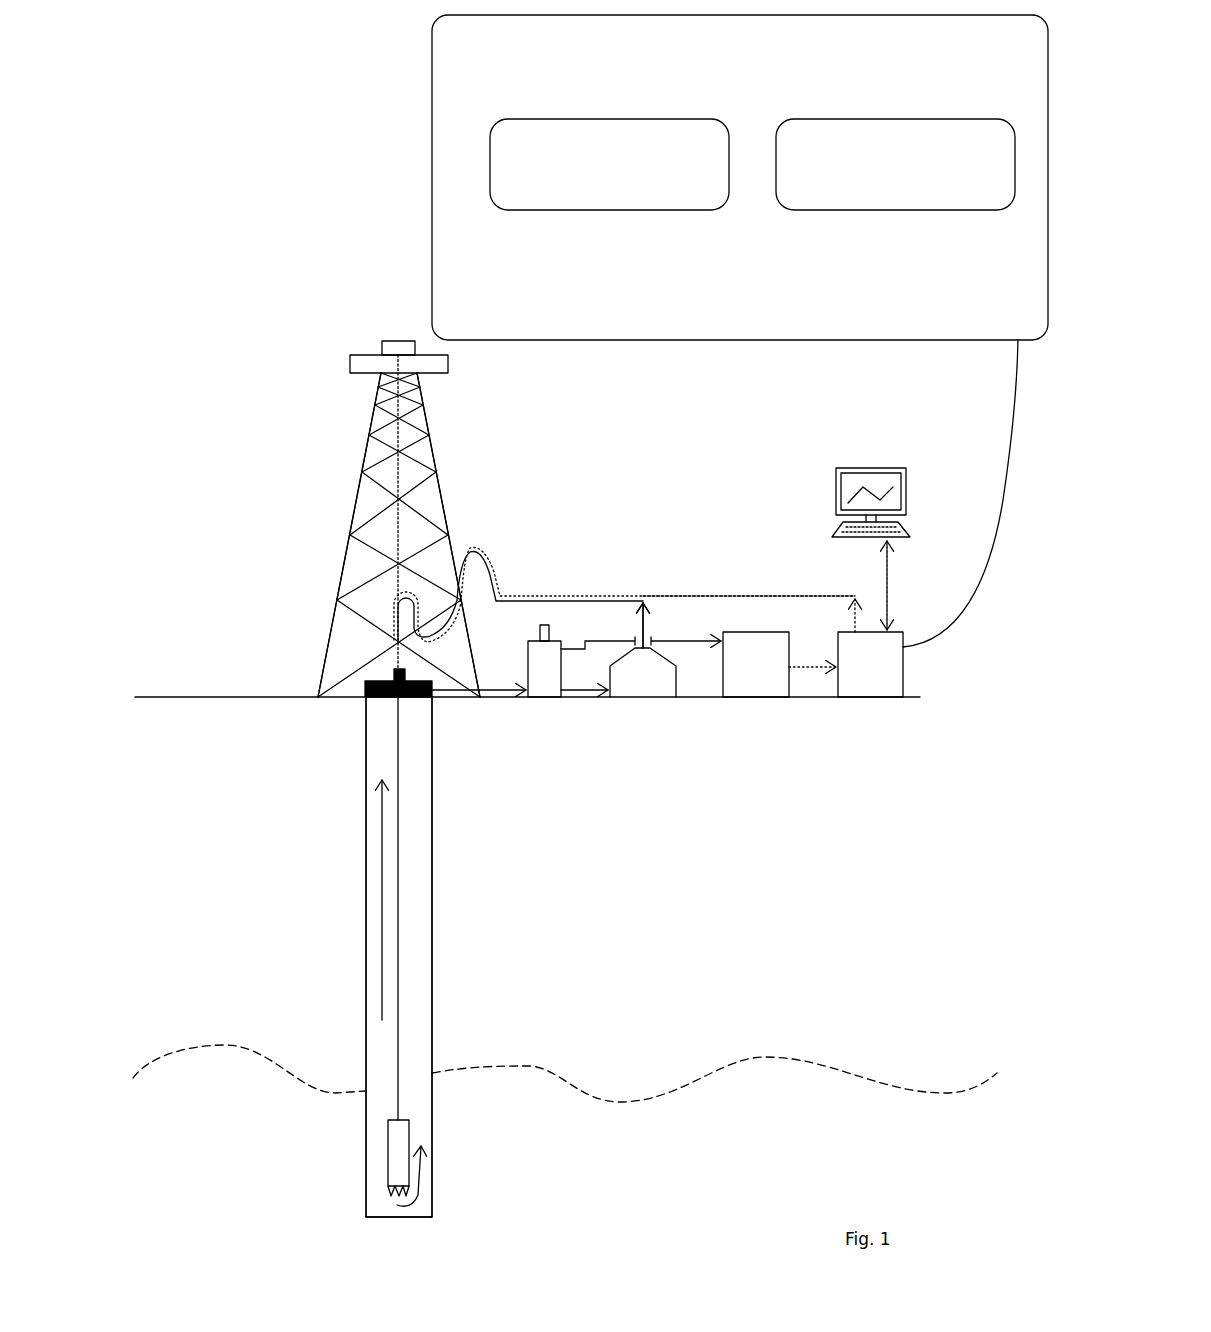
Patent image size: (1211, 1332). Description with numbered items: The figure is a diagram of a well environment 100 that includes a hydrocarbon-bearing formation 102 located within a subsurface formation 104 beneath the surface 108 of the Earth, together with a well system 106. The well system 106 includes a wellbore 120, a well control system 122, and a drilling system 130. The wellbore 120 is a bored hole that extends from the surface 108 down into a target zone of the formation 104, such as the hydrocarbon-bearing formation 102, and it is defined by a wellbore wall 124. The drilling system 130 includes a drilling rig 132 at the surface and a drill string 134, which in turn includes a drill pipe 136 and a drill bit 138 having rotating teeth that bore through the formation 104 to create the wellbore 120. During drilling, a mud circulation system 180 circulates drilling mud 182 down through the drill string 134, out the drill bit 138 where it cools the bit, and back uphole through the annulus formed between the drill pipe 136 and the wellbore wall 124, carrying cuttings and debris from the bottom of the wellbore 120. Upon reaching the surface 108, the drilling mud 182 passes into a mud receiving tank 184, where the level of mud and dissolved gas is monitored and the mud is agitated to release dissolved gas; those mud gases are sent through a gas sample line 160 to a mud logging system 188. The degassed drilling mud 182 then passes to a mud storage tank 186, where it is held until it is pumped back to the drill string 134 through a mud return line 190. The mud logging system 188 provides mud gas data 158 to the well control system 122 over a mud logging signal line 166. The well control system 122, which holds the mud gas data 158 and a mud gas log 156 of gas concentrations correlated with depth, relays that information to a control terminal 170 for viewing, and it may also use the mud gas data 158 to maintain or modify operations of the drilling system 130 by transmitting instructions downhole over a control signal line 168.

The well environment 100 is at (189, 146).
The hydrocarbon-bearing formation 102 is at (714, 1103).
The subsurface formation 104 is at (467, 1032).
The well system 106 is at (209, 291).
The surface 108 is at (205, 694).
The wellbore 120 is at (382, 1056).
The well control system 122 is at (930, 740).
The wellbore wall 124 is at (432, 905).
The drilling system 130 is at (324, 406).
The drilling rig 132 is at (355, 502).
The drill string 134 is at (388, 1138).
The drill pipe 136 is at (399, 835).
The drill bit 138 is at (388, 1190).
The mud gas log 156 is at (609, 164).
The mud gas data 158 is at (895, 164).
The gas sample line 160 is at (675, 633).
The mud logging signal line 166 is at (815, 677).
The control signal line 168 is at (788, 586).
The control terminal 170 is at (870, 470).
The mud circulation system 180 is at (675, 468).
The drilling mud 182 is at (382, 843).
The mud receiving tank 184 is at (546, 683).
The mud storage tank 186 is at (638, 683).
The mud logging system 188 is at (757, 699).
The mud return line 190 is at (553, 586).